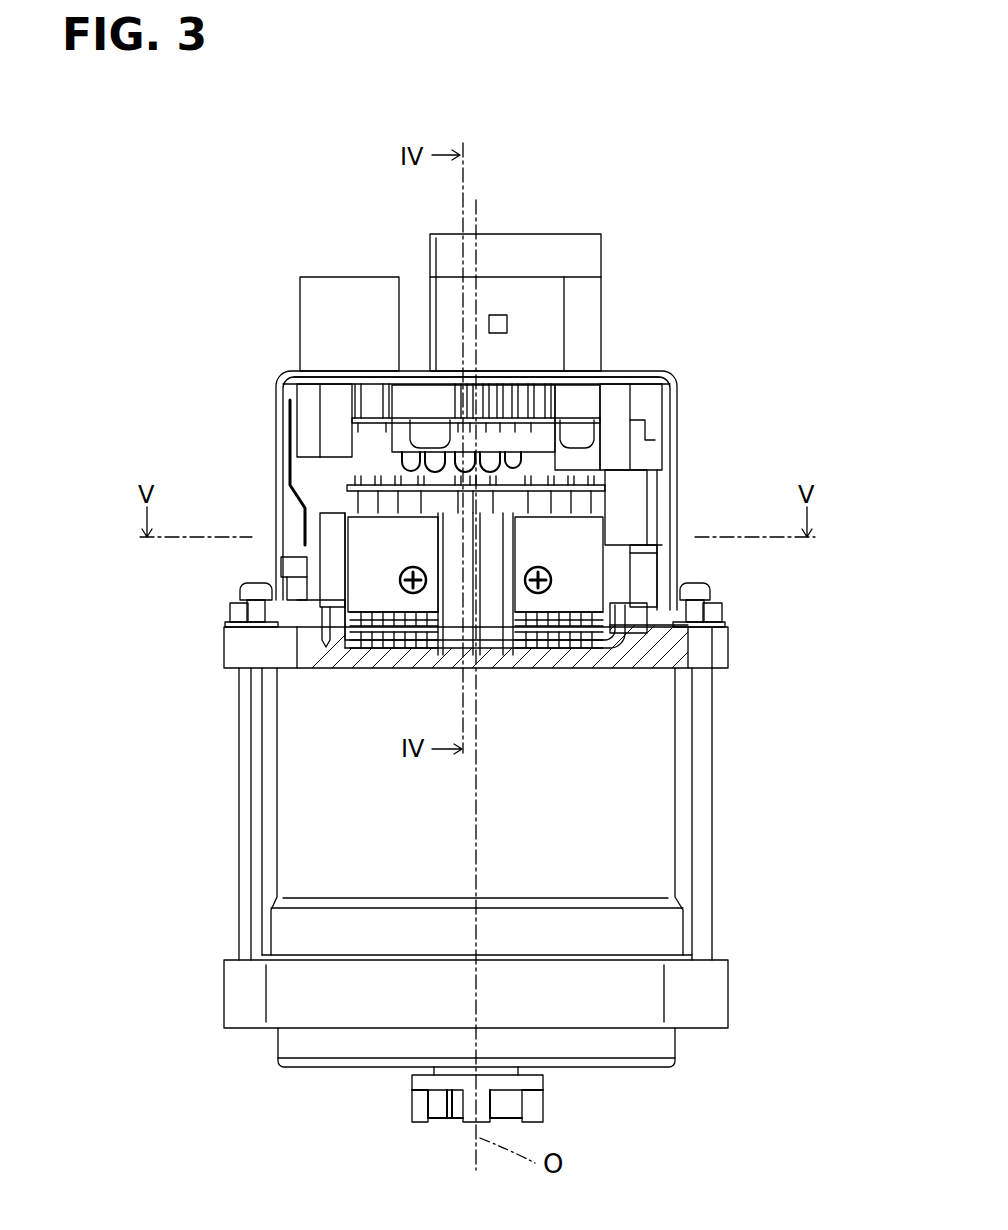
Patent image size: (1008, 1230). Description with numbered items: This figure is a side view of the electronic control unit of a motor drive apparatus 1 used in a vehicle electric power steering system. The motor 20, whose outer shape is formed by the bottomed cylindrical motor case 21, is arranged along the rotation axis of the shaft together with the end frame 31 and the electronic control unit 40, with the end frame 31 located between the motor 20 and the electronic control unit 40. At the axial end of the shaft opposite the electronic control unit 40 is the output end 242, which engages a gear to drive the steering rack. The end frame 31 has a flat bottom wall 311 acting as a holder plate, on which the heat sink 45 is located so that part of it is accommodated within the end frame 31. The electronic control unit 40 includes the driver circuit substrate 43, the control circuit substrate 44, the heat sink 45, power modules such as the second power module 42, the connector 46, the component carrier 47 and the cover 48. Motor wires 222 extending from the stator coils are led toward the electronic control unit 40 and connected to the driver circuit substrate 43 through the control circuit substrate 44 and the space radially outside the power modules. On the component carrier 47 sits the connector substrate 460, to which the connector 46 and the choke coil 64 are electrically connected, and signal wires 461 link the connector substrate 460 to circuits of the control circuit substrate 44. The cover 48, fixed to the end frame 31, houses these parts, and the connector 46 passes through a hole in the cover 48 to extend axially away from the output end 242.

The motor drive apparatus 1 is at (138, 283).
The motor 20 is at (694, 845).
The motor case 21 is at (676, 740).
The end frame 31 is at (533, 641).
The bottom wall 311 is at (720, 636).
The electronic control unit 40 is at (800, 572).
The second power module 42 is at (320, 540).
The driver circuit substrate 43 is at (620, 490).
The control circuit substrate 44 is at (660, 612).
The heat sink 45 is at (350, 500).
The connector 46 is at (601, 263).
The connector substrate 460 is at (590, 428).
The signal wires 461 is at (290, 460).
The component carrier 47 is at (677, 398).
The cover 48 is at (672, 374).
The choke coil 64 is at (400, 462).
The motor wires 222 is at (520, 548).
The output end 242 is at (543, 1080).